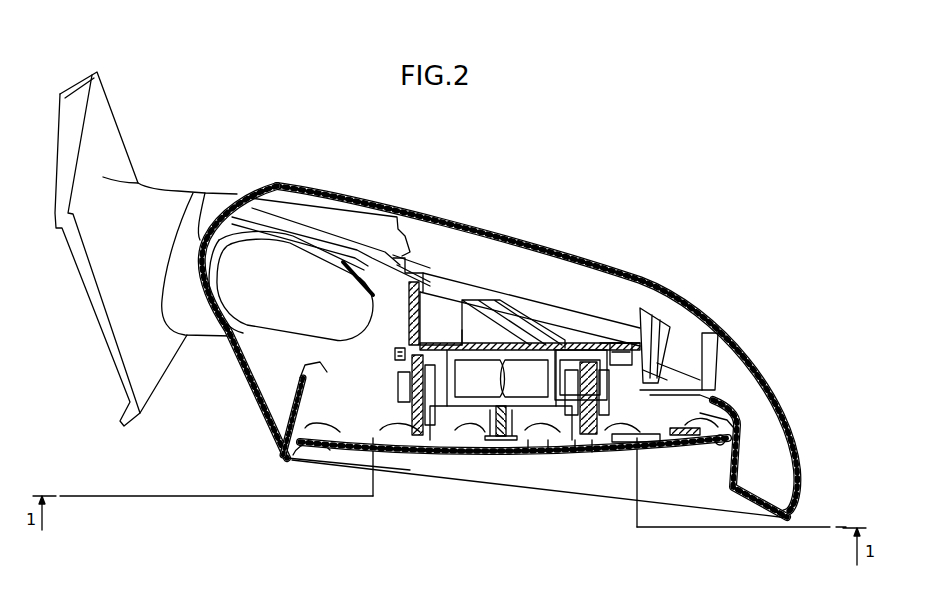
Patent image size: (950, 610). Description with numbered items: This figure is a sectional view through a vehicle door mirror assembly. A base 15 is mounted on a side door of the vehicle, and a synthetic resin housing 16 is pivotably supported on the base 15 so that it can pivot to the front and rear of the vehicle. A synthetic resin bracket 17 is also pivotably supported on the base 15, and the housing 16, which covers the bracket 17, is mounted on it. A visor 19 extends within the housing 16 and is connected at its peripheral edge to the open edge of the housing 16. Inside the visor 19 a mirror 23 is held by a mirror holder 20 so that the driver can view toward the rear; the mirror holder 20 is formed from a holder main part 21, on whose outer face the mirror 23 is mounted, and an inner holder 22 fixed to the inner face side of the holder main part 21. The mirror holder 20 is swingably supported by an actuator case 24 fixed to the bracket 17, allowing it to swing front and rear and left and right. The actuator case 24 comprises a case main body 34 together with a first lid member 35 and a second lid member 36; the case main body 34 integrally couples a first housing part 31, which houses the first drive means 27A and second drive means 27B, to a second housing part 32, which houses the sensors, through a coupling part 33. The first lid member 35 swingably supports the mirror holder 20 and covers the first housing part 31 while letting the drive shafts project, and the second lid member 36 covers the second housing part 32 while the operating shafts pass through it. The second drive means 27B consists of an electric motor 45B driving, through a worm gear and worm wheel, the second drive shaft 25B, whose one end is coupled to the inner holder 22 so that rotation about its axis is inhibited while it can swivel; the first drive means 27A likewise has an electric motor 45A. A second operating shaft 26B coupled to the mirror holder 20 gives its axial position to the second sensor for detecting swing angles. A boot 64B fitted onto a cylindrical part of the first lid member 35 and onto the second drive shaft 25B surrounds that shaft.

The base 15 is at (125, 150).
The housing 16 is at (540, 248).
The bracket 17 is at (466, 290).
The visor 19 is at (757, 512).
The mirror holder 20 is at (585, 535).
The holder main part 21 is at (583, 452).
The inner holder 22 is at (542, 452).
The mirror 23 is at (500, 460).
The actuator case 24 is at (621, 343).
The second drive shaft 25B is at (585, 365).
The second operating shaft 26B is at (412, 417).
The first drive means 27A is at (445, 352).
The second drive means 27B is at (598, 420).
The first housing part 31 is at (536, 351).
The second housing part 32 is at (410, 330).
The coupling part 33 is at (405, 353).
The case main body 34 is at (524, 350).
The first lid member 35 is at (462, 440).
The second lid member 36 is at (400, 394).
The electric motor 45A is at (493, 389).
The electric motor 45B is at (543, 389).
The boot 64B is at (630, 444).